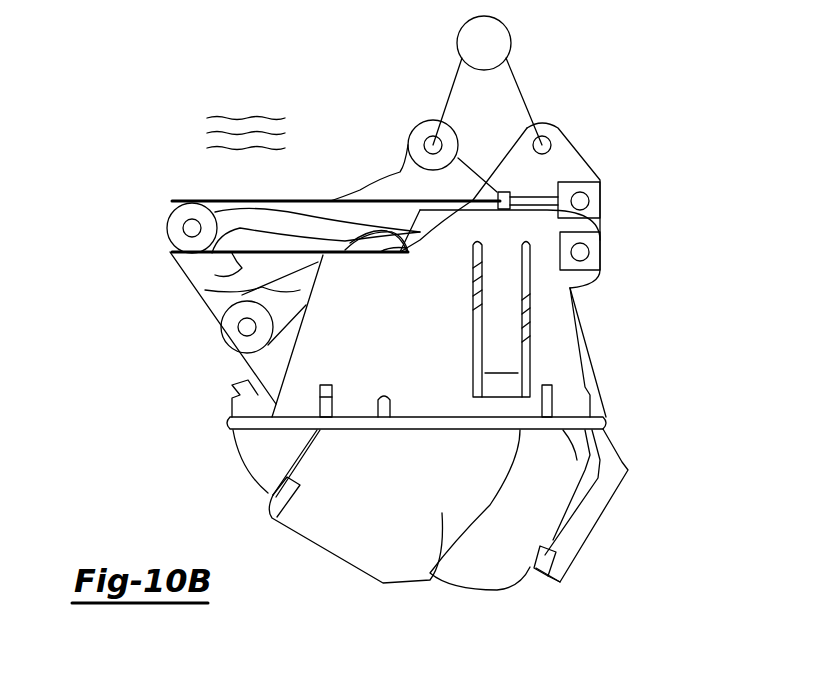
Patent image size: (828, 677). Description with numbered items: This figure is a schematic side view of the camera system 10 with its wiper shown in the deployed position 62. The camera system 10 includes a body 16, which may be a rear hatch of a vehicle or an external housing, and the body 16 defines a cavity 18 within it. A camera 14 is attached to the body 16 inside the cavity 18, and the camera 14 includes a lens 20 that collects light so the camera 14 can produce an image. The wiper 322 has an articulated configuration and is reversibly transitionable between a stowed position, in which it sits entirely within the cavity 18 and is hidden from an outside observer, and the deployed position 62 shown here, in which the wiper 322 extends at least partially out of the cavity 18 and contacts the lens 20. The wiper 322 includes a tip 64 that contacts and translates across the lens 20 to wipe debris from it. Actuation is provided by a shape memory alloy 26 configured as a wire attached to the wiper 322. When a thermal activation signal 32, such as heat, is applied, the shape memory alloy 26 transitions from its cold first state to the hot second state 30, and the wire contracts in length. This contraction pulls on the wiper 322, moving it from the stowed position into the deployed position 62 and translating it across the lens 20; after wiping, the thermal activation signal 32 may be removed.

The camera system 10 is at (147, 72).
The thermal activation signal 32 is at (250, 118).
The shape memory alloy 26 is at (295, 201).
The second state 30 is at (140, 342).
The body 16 is at (580, 348).
The wiper 322 is at (603, 378).
The cavity 18 is at (200, 423).
The camera 14 is at (390, 585).
The lens 20 is at (567, 533).
The tip 64 is at (537, 567).
The deployed position 62 is at (590, 580).